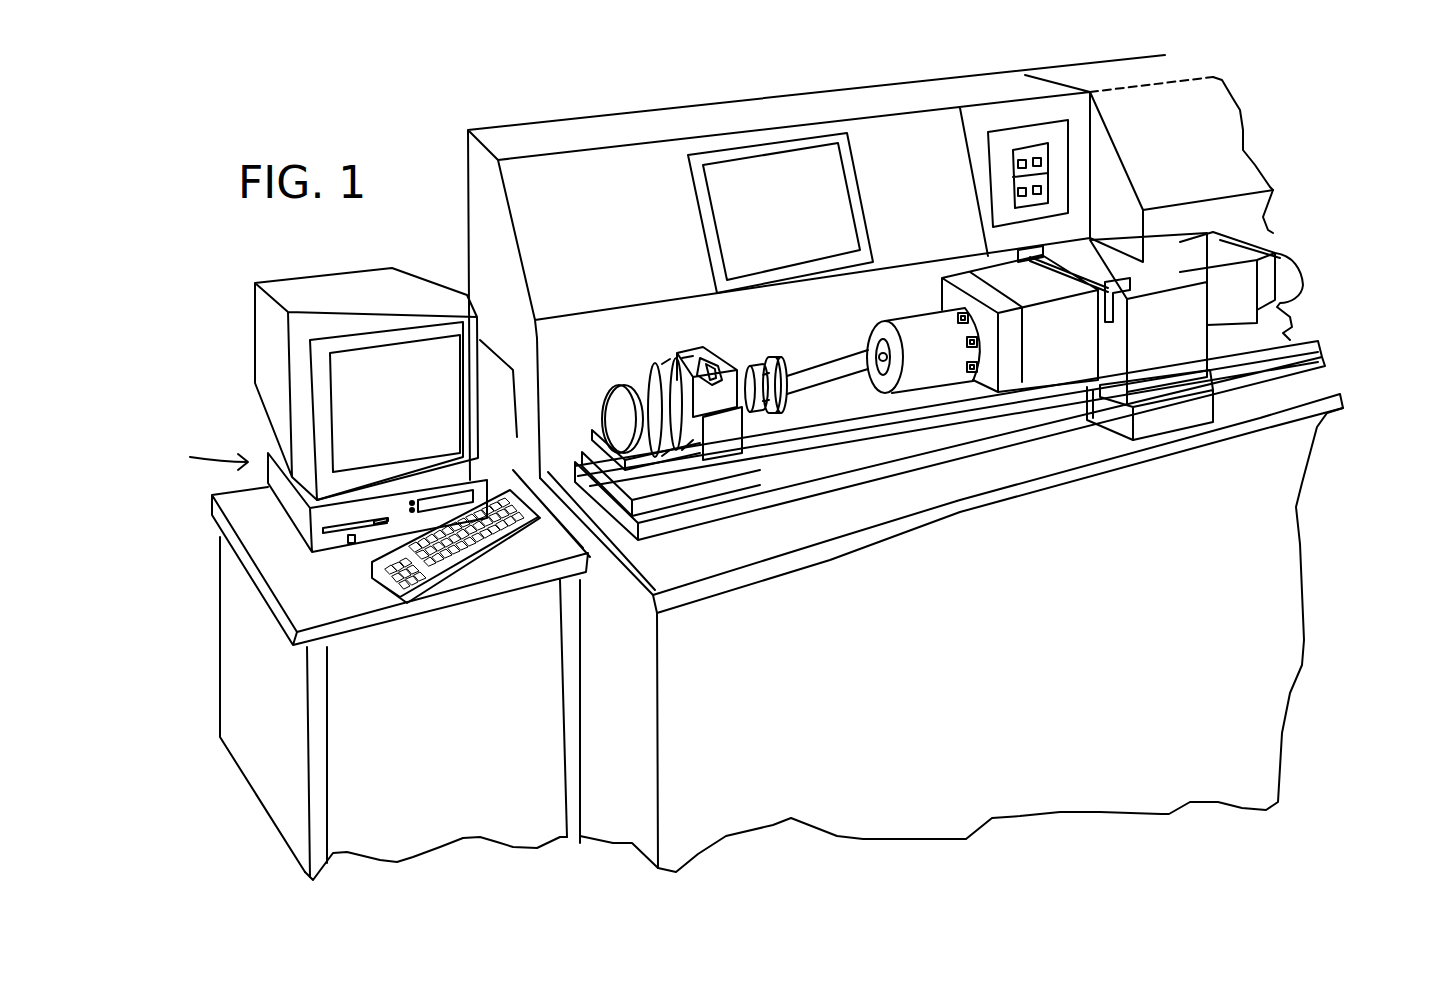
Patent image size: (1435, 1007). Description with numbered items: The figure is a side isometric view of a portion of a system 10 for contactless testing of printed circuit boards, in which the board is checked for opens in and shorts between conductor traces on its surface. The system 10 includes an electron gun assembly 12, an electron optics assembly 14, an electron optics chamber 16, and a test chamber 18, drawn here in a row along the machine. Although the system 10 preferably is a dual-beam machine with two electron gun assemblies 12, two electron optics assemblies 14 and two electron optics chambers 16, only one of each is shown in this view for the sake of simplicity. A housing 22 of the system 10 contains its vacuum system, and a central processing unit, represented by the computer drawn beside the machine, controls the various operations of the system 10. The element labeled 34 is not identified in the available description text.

The system 10 is at (1208, 48).
The electron gun assembly 12 is at (654, 337).
The electron optics assembly 14 is at (909, 307).
The electron optics chamber 16 is at (1067, 350).
The test chamber 18 is at (1175, 364).
The housing 22 is at (1242, 568).
The mounting bracket 34 is at (740, 410).